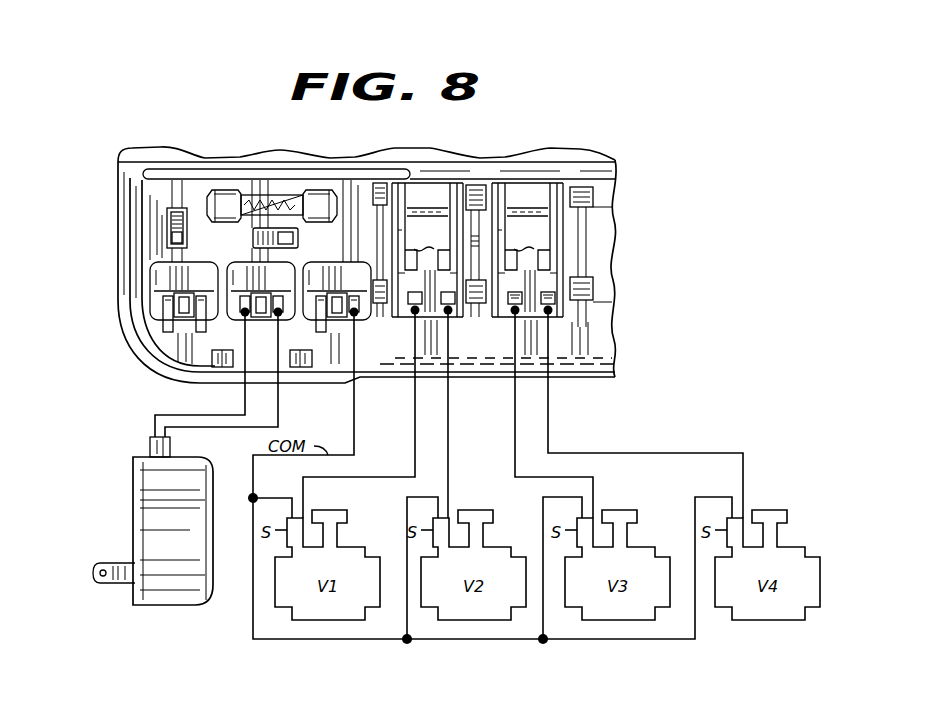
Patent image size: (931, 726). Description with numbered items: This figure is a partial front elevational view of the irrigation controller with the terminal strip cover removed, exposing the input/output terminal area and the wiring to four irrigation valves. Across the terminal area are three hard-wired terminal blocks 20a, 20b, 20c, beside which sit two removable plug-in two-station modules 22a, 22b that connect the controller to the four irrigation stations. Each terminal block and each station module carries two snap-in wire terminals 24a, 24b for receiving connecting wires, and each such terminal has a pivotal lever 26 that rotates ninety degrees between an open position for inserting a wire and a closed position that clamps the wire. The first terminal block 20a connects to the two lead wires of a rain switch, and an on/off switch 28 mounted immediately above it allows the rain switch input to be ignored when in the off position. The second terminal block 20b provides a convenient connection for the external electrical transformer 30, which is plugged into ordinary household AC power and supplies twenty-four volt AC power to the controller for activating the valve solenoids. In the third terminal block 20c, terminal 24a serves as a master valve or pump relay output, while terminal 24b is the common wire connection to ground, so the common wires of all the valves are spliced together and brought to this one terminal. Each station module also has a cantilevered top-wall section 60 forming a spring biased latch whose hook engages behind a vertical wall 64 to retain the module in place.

The first terminal block 20a is at (163, 278).
The second terminal block 20b is at (248, 273).
The third terminal block 20c is at (341, 273).
The two-station module 22a is at (428, 200).
The two-station module 22b is at (540, 200).
The snap-in wire terminal 24a is at (322, 333).
The snap-in wire terminal 24b is at (357, 325).
The pivotal lever 26 is at (200, 318).
The on/off switch 28 is at (160, 214).
The external electrical transformer 30 is at (150, 531).
The section of the top wall 60 is at (473, 239).
The vertical wall 64 is at (477, 173).